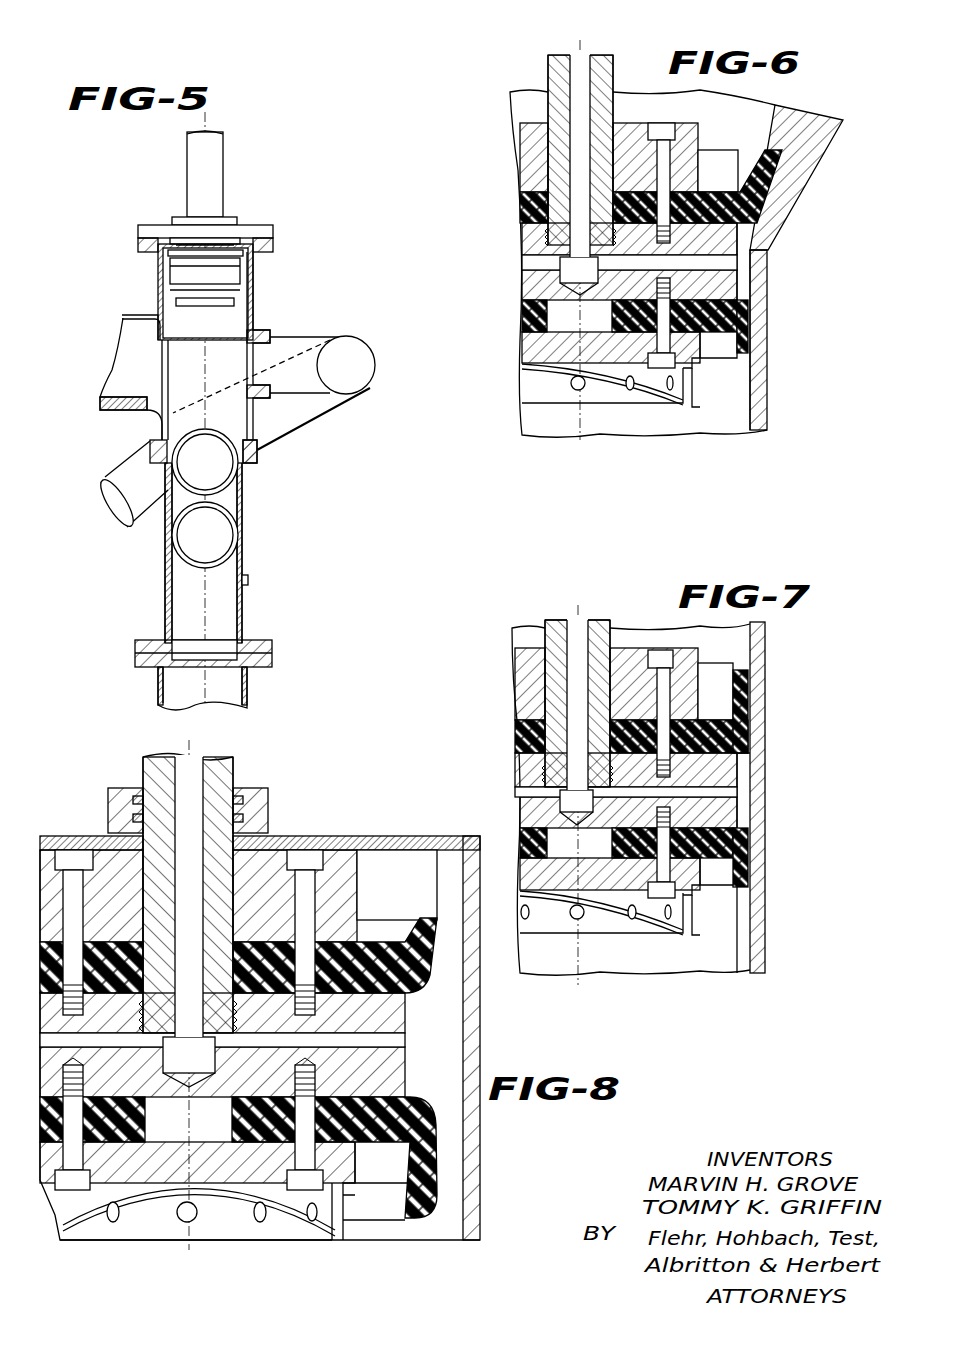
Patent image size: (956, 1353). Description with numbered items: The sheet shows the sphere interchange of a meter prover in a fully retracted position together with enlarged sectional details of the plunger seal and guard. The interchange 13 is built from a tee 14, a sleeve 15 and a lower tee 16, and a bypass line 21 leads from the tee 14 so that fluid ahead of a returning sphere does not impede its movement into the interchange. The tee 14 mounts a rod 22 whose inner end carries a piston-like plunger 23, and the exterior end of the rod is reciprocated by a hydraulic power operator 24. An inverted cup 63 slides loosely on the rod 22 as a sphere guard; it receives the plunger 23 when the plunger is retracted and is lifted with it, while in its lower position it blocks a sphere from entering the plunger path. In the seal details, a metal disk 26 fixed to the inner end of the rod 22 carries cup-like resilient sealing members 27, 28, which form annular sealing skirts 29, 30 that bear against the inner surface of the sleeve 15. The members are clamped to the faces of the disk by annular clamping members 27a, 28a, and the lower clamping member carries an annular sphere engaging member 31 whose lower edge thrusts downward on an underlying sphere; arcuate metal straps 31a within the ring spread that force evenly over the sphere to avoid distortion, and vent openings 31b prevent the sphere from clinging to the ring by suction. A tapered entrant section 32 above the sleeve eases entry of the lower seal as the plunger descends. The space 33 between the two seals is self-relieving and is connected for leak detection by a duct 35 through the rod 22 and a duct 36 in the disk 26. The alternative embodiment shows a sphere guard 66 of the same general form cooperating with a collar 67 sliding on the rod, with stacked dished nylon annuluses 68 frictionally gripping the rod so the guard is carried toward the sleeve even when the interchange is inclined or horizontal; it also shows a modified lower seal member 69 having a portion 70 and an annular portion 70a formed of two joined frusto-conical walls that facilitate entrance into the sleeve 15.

In FIG. 5, the interchange 13 is at (244, 554).
In FIG. 5, the tee 14 is at (256, 316).
In FIG. 5, the sleeve 15 is at (243, 516).
In FIG. 6, the sleeve 15 is at (762, 404).
In FIG. 7, the sleeve 15 is at (760, 935).
In FIG. 5, the tee 16 is at (158, 692).
In FIG. 5, the bypass line 21 is at (300, 420).
In FIG. 5, the rod 22 is at (208, 238).
In FIG. 6, the rod 22 is at (612, 72).
In FIG. 7, the rod 22 is at (610, 632).
In FIG. 8, the rod 22 is at (233, 767).
In FIG. 5, the plunger 23 is at (244, 279).
In FIG. 6, the plunger 23 is at (709, 168).
In FIG. 7, the plunger 23 is at (730, 672).
In FIG. 8, the plunger 23 is at (397, 885).
In FIG. 5, the power operator 24 is at (222, 166).
In FIG. 6, the metal disk 26 is at (740, 284).
In FIG. 7, the metal disk 26 is at (735, 818).
In FIG. 8, the metal disk 26 is at (222, 1045).
In FIG. 6, the resilient sealing member 27 is at (521, 208).
In FIG. 7, the resilient sealing member 27 is at (735, 740).
In FIG. 8, the resilient sealing member 27 is at (372, 962).
In FIG. 6, the annular clamping member 27a is at (521, 147).
In FIG. 7, the annular clamping member 27a is at (516, 680).
In FIG. 8, the annular clamping member 27a is at (357, 890).
In FIG. 6, the resilient sealing member 28 is at (522, 316).
In FIG. 7, the resilient sealing member 28 is at (728, 888).
In FIG. 6, the annular clamping member 28a is at (524, 352).
In FIG. 7, the annular clamping member 28a is at (548, 880).
In FIG. 8, the annular clamping member 28a is at (240, 1180).
In FIG. 6, the annular sealing skirt 29 is at (772, 197).
In FIG. 7, the annular sealing skirt 29 is at (750, 708).
In FIG. 8, the annular sealing skirt 29 is at (437, 930).
In FIG. 6, the annular sealing skirt 30 is at (743, 350).
In FIG. 7, the annular sealing skirt 30 is at (735, 872).
In FIG. 8, the annular sealing skirt 30 is at (370, 1191).
In FIG. 6, the sphere engaging member 31 is at (528, 393).
In FIG. 7, the sphere engaging member 31 is at (617, 956).
In FIG. 8, the sphere engaging member 31 is at (212, 1243).
In FIG. 7, the arcuate metal straps 31a is at (665, 925).
In FIG. 8, the arcuate metal straps 31a is at (78, 1232).
In FIG. 7, the vent openings 31b is at (580, 920).
In FIG. 8, the vent openings 31b is at (187, 1223).
In FIG. 5, the tapered entrant section 32 is at (255, 455).
In FIG. 6, the tapered entrant section 32 is at (803, 170).
In FIG. 7, the space 33 is at (745, 793).
In FIG. 6, the duct 35 is at (580, 55).
In FIG. 7, the duct 35 is at (578, 620).
In FIG. 8, the duct 35 is at (192, 760).
In FIG. 6, the duct 36 is at (525, 262).
In FIG. 7, the duct 36 is at (522, 792).
In FIG. 8, the duct 36 is at (405, 1040).
In FIG. 5, the cup 63 is at (160, 280).
In FIG. 8, the sphere guard 66 is at (481, 1142).
In FIG. 8, the collar 67 is at (175, 792).
In FIG. 8, the dished nylon annuluses 68 is at (244, 818).
In FIG. 8, the lower seal member 69 is at (405, 1112).
In FIG. 8, the portion 70 is at (417, 1218).
In FIG. 8, the annular portion 70a is at (432, 1143).